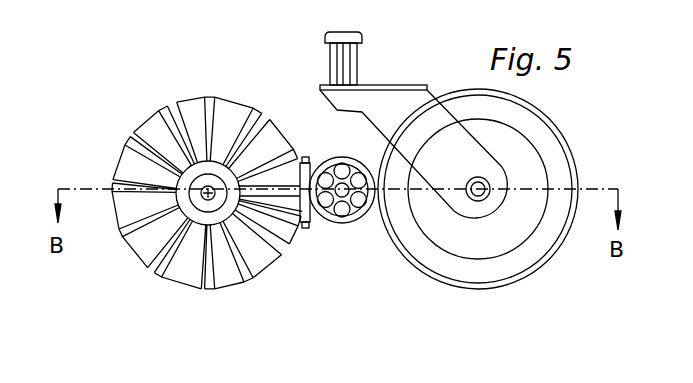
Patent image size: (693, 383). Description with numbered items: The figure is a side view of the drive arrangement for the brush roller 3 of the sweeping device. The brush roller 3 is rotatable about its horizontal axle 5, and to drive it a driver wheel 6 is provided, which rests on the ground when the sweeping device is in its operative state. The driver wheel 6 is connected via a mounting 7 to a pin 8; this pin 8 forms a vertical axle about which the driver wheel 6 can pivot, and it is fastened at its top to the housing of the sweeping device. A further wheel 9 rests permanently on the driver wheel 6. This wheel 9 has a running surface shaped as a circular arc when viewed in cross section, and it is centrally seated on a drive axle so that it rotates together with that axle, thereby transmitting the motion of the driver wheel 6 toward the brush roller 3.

The brush roller 3 is at (233, 277).
The horizontal axle 5 is at (208, 200).
The driver wheel 6 is at (560, 150).
The mounting 7 is at (405, 112).
The pin 8 is at (348, 65).
The further wheel 9 is at (350, 223).